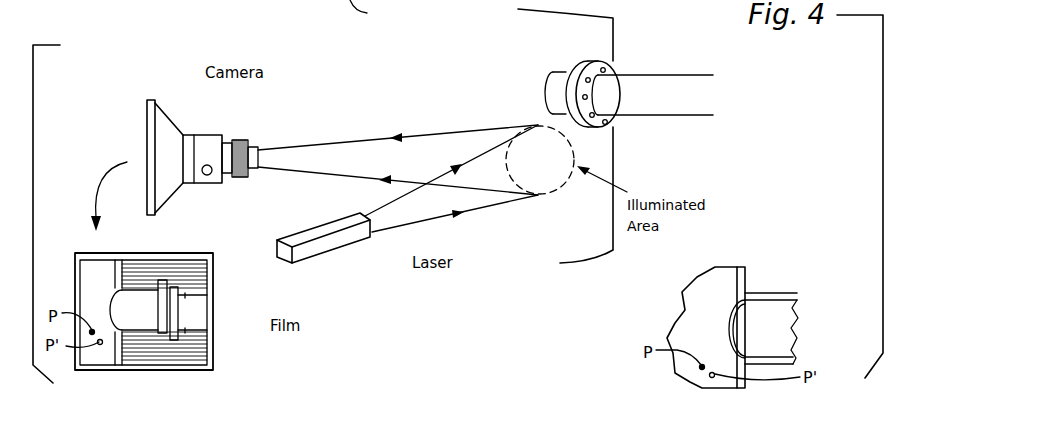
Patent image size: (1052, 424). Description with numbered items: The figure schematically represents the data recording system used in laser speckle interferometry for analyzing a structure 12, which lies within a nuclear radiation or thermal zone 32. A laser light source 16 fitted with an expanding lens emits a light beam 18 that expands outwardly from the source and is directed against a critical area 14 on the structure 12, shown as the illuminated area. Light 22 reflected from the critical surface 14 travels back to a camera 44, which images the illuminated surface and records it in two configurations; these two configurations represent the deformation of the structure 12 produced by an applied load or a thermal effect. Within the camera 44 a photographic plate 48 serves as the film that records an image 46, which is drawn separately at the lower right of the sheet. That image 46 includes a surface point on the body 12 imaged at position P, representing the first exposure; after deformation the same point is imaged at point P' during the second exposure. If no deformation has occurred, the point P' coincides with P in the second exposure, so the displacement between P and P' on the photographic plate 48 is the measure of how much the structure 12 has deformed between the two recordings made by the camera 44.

The structure 12 is at (603, 40).
The critical area 14 is at (549, 180).
The laser light source 16 is at (347, 242).
The light beam 18 is at (485, 208).
The reflected light 22 is at (331, 144).
The nuclear radiation or thermal zone 32 is at (373, 14).
The camera 44 is at (162, 113).
The image 46 is at (774, 283).
The photographic plate 48 is at (210, 315).